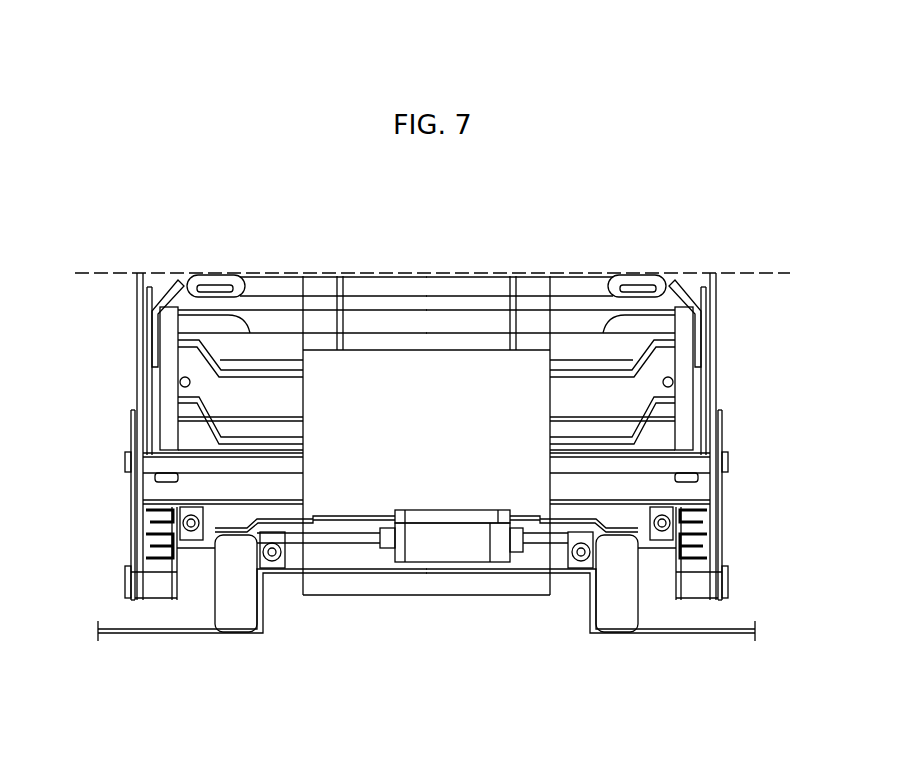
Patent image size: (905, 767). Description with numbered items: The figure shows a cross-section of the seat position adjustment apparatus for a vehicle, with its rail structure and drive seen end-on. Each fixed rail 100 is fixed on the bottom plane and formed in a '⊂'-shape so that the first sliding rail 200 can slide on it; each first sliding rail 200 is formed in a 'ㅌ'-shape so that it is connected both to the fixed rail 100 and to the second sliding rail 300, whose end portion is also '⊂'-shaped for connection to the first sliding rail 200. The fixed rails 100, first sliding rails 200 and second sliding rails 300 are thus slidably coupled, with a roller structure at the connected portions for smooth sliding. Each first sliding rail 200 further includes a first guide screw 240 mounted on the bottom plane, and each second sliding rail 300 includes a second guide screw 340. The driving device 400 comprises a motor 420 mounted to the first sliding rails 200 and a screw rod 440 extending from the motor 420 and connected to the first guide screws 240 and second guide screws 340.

The fixed rail 100 is at (712, 546).
The first sliding rail 200 is at (545, 540).
The first guide screw 240 is at (593, 556).
The second sliding rail 300 is at (187, 501).
The second guide screw 340 is at (177, 522).
The driving device 400 is at (412, 630).
The motor 420 is at (437, 540).
The screw rod 440 is at (332, 537).